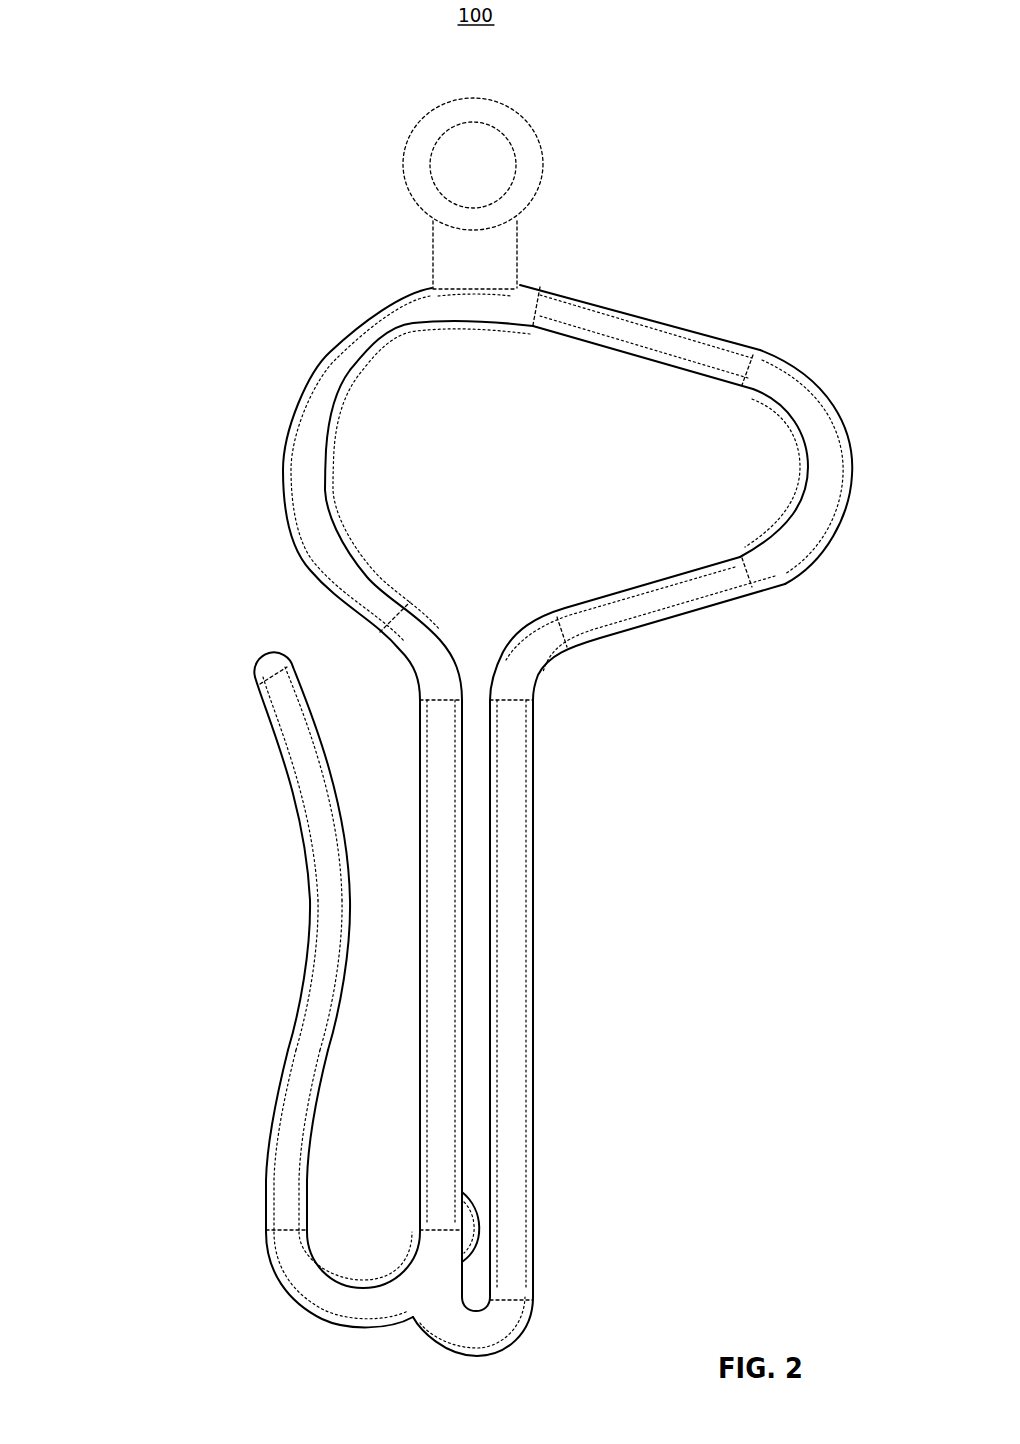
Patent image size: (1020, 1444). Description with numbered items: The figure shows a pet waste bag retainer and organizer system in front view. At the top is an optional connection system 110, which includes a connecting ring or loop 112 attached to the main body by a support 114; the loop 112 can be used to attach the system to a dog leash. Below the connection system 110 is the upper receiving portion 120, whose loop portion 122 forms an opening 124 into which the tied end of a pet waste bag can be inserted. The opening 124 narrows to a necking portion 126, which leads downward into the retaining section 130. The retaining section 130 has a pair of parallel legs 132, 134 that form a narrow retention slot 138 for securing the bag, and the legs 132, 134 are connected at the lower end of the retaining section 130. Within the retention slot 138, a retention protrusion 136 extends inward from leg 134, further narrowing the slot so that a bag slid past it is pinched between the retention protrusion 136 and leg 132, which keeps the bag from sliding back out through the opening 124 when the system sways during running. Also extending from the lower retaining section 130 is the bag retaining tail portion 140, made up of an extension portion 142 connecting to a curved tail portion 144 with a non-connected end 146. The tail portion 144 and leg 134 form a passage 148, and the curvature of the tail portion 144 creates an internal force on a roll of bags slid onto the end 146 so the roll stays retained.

The connection system 110 is at (403, 189).
The connecting ring or loop 112 is at (527, 160).
The support 114 is at (503, 248).
The receiving portion 120 is at (484, 476).
The loop portion 122 is at (633, 335).
The opening 124 is at (697, 420).
The necking portion 126 is at (482, 655).
The retaining section 130 is at (584, 1028).
The leg 132 is at (512, 780).
The leg 134 is at (437, 972).
The retention protrusion 136 is at (470, 1225).
The retention slot 138 is at (470, 867).
The bag retaining tail portion 140 is at (237, 982).
The extension portion 142 is at (308, 1288).
The tail portion 144 is at (322, 977).
The non-connected end 146 is at (278, 690).
The passage 148 is at (357, 1129).